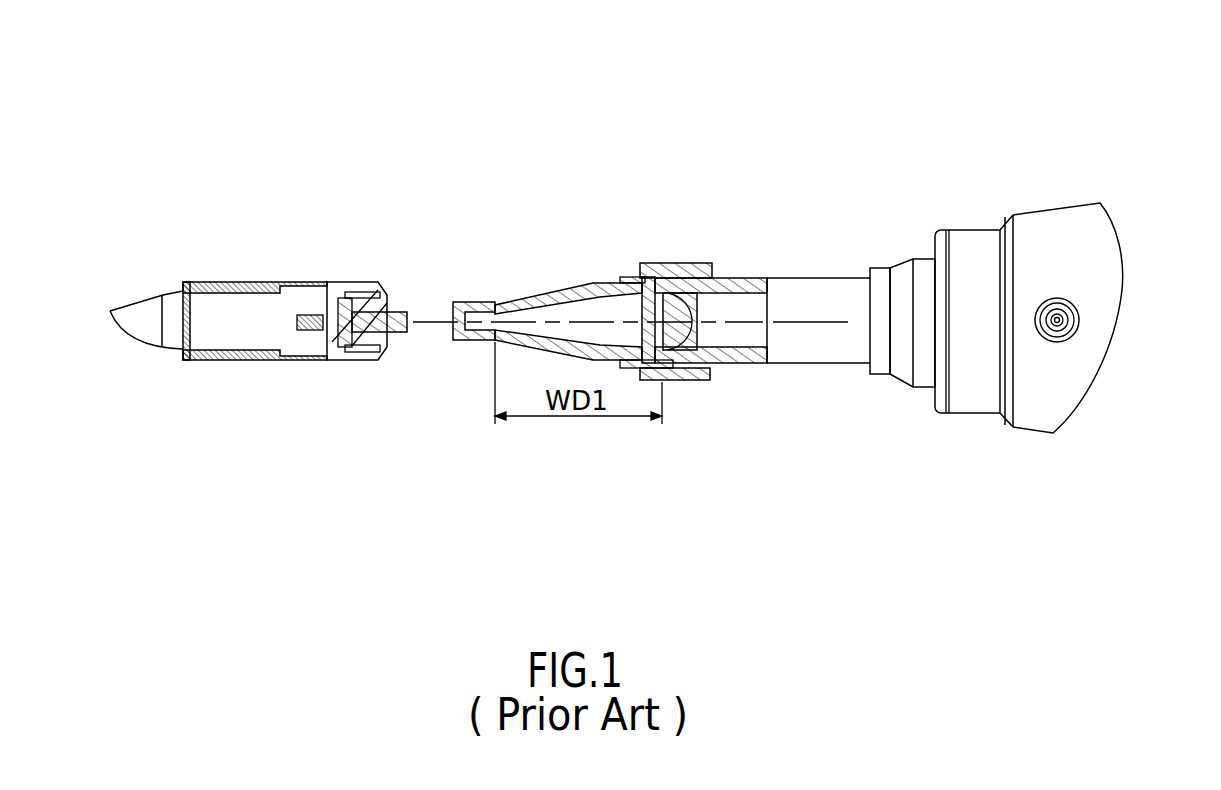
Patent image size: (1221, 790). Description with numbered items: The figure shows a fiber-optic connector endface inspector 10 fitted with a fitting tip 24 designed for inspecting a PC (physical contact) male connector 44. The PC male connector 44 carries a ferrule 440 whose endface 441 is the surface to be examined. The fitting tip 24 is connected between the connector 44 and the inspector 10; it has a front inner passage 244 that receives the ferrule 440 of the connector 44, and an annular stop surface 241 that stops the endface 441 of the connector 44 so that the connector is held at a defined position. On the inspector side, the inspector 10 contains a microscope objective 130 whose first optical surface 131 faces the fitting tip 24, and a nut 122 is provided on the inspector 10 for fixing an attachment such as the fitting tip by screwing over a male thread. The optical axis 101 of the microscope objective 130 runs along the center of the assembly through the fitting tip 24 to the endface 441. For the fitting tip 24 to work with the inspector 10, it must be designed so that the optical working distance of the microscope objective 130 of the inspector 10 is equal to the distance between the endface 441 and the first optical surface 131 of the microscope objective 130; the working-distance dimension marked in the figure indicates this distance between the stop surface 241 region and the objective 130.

The inspector 10 is at (1062, 255).
The optical axis 101 is at (790, 322).
The nut 122 is at (680, 383).
The microscope objective 130 is at (857, 309).
The first optical surface 131 is at (628, 277).
The fitting tip 24 is at (563, 304).
The annular stop surface 241 is at (467, 345).
The front inner passage 244 is at (475, 315).
The PC male connector 44 is at (273, 310).
The ferrule 440 is at (375, 358).
The endface 441 is at (420, 313).